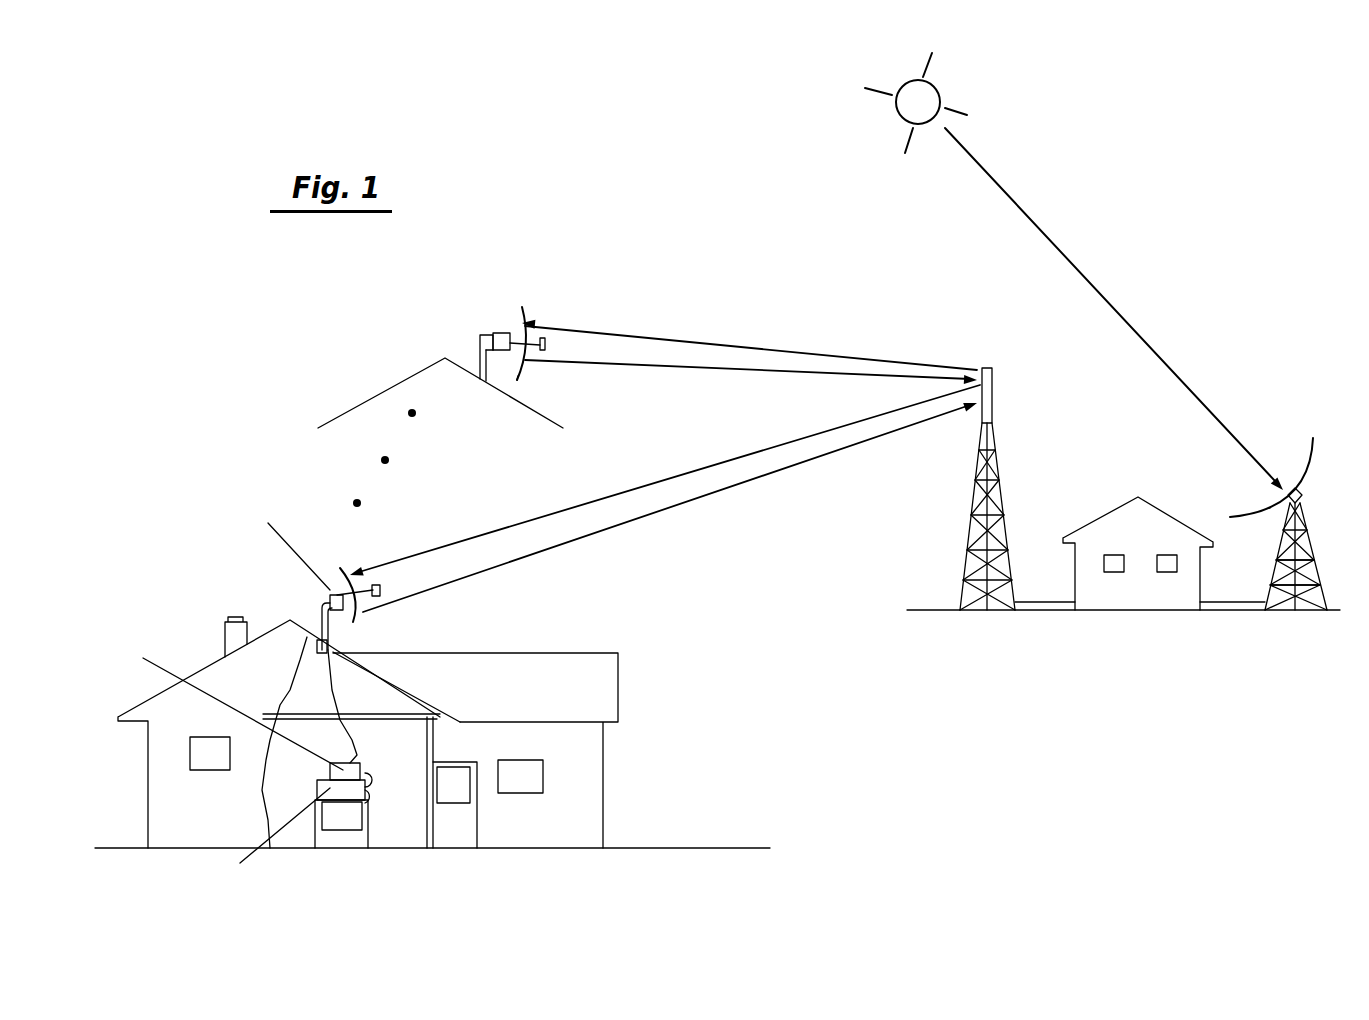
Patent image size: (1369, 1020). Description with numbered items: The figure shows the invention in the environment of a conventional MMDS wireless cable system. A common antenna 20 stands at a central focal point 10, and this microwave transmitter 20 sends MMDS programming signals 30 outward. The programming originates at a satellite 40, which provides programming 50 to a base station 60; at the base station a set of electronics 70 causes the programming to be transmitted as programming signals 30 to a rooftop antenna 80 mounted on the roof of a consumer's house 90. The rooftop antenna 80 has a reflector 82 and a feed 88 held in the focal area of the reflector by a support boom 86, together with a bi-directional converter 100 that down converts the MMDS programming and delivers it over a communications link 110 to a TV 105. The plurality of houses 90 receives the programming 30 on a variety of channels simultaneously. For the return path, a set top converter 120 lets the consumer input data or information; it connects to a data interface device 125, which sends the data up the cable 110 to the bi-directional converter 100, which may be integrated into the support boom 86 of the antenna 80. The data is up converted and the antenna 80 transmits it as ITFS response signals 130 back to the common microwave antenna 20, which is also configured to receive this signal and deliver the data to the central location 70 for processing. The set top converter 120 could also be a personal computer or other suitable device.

The central focal point 10 is at (1015, 462).
The common antenna 20 is at (995, 390).
The programming signals 30 is at (736, 345).
The satellite 40 is at (950, 90).
The programming 50 is at (1062, 252).
The base station 60 is at (1312, 480).
The set of electronics 70 is at (1110, 608).
The rooftop antenna 80 is at (470, 322).
The reflector 82 is at (519, 300).
The support boom 86 is at (520, 360).
The feed 88 is at (575, 345).
The house 90 is at (378, 385).
The bi-directional converter 100 is at (500, 333).
The TV 105 is at (345, 837).
The communications link 110 is at (353, 737).
The set top converter 120 is at (320, 790).
The data interface device 125 is at (327, 773).
The ITFS response signals 130 is at (662, 368).